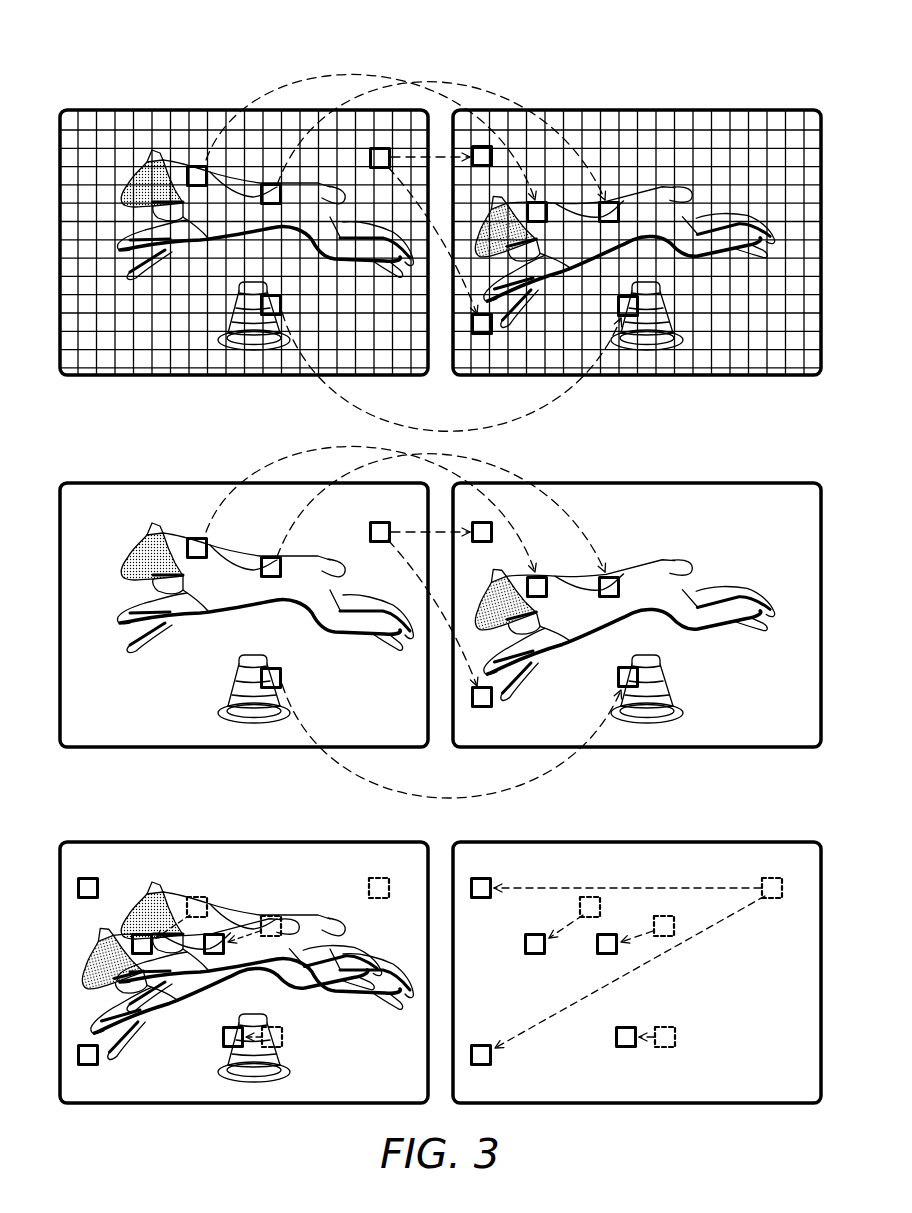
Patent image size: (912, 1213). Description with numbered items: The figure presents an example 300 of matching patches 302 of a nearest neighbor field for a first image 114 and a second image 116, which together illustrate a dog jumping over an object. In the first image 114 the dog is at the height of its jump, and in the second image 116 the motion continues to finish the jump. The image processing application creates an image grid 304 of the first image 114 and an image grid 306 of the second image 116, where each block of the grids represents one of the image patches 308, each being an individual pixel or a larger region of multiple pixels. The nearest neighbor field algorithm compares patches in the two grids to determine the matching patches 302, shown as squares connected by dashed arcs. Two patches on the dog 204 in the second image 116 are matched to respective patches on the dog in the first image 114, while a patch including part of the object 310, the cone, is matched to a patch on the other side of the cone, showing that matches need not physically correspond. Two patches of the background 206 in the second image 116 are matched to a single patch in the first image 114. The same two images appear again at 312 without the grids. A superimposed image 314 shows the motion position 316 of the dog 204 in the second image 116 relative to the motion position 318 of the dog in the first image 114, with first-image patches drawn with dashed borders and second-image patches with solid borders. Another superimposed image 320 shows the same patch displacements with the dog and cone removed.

The example of matching patches 300 is at (607, 65).
The matching patches 302 is at (463, 70).
The image grid of the first image 304 is at (109, 155).
The image grid of the second image 306 is at (688, 155).
The image patches 308 is at (88, 138).
The first image 114 is at (244, 275).
The second image 116 is at (637, 275).
The first and second images shown without the image grids 312 is at (711, 467).
The dog 204 is at (670, 553).
The background 206 is at (637, 615).
The object 310 is at (677, 697).
The superimposed image 314 is at (243, 841).
The motion position of the dog in the second image 316 is at (104, 936).
The motion position of the dog in the first image 318 is at (176, 886).
The superimposed image with objects removed 320 is at (666, 841).